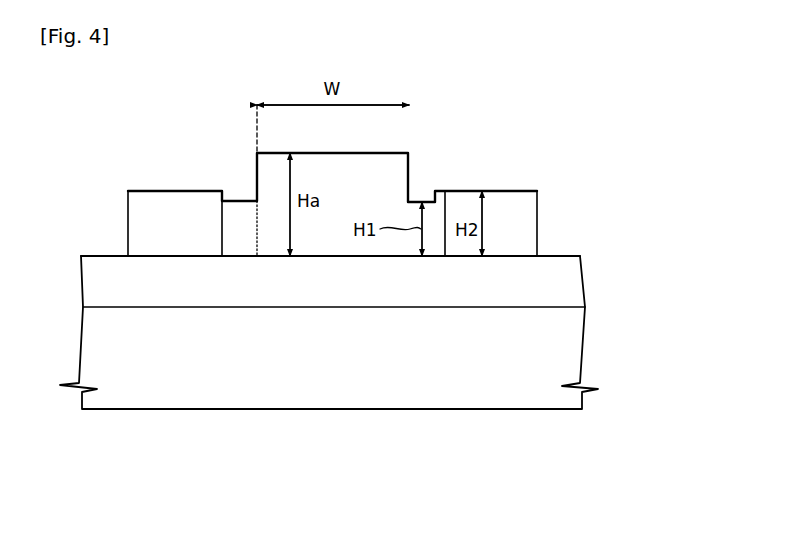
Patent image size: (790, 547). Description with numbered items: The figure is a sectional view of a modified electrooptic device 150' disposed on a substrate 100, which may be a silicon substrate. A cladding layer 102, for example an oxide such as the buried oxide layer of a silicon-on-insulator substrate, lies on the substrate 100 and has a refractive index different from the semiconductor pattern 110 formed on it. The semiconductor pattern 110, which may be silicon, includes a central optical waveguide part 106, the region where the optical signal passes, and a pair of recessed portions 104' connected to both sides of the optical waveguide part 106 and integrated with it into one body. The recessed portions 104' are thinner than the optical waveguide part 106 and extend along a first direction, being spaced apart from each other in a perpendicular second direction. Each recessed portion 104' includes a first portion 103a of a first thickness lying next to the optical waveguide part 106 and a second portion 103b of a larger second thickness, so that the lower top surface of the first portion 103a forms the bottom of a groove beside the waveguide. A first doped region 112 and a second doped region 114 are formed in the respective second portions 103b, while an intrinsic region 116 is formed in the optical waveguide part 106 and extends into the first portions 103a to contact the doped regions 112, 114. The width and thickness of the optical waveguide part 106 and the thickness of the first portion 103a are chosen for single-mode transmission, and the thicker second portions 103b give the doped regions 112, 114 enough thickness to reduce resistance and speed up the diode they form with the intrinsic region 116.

The substrate 100 is at (568, 345).
The cladding layer 102 is at (572, 284).
The first portion 103a is at (240, 262).
The second portion 103b is at (170, 262).
The recessed portion 104' is at (333, 488).
The optical waveguide part 106 is at (327, 262).
The semiconductor pattern 110 is at (482, 507).
The first doped region 112 is at (130, 225).
The second doped region 114 is at (520, 222).
The intrinsic region 116 is at (378, 200).
The electrooptic device 150' is at (343, 132).